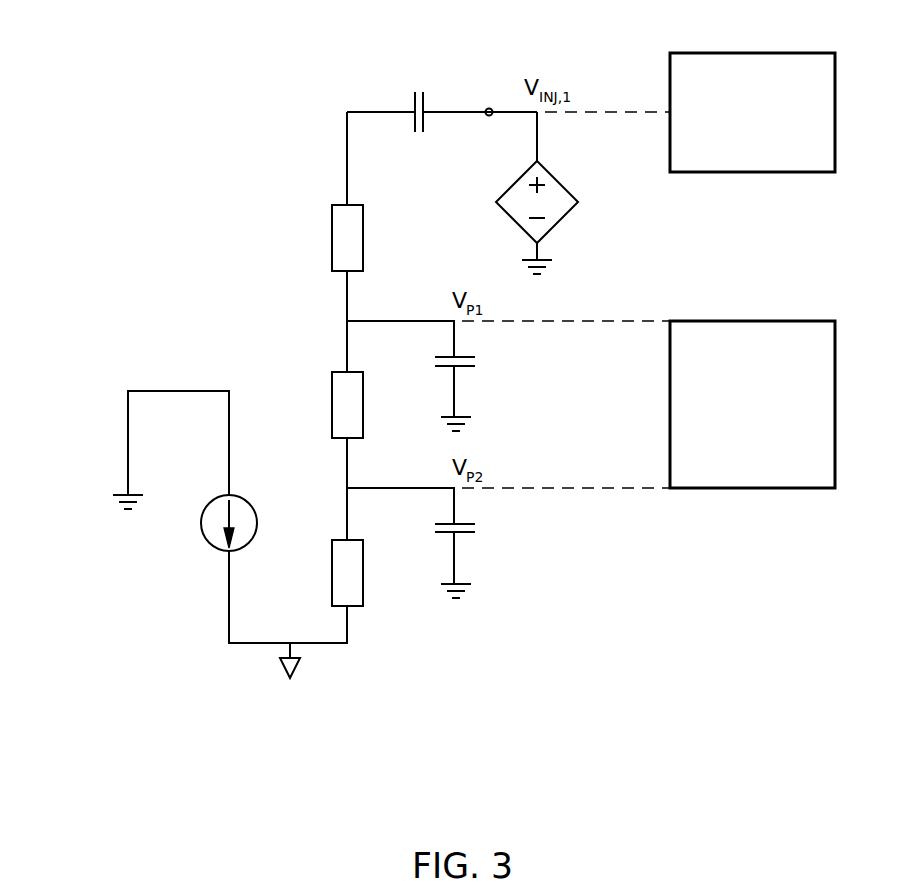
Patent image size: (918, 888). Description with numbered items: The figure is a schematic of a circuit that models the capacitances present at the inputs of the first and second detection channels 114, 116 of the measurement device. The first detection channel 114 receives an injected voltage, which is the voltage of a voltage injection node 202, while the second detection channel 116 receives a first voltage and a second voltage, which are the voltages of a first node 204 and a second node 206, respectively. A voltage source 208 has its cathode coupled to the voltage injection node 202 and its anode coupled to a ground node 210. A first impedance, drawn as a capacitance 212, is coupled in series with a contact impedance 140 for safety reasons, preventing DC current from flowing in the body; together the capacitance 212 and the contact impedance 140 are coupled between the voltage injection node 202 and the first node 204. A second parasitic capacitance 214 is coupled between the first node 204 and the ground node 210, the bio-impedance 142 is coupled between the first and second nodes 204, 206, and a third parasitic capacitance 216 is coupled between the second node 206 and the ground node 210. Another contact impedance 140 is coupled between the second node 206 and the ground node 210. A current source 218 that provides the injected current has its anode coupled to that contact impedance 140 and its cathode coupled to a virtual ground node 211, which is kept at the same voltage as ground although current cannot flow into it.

The first detection channel 114 is at (753, 53).
The second detection channel 116 is at (753, 321).
The contact impedance 140 is at (332, 243).
The bio-impedance 142 is at (332, 413).
The voltage injection node 202 is at (489, 110).
The first node 204 is at (352, 318).
The second node 206 is at (352, 485).
The voltage source 208 is at (562, 177).
The ground node 210 is at (542, 252).
The virtual ground node 211 is at (292, 650).
The capacitance 212 is at (425, 122).
The second parasitic capacitance 214 is at (466, 354).
The third parasitic capacitance 216 is at (466, 521).
The current source 218 is at (212, 547).